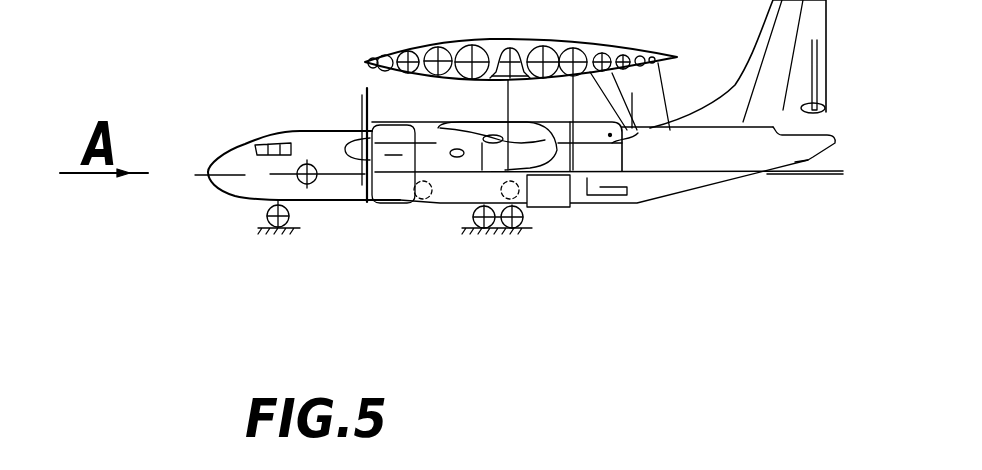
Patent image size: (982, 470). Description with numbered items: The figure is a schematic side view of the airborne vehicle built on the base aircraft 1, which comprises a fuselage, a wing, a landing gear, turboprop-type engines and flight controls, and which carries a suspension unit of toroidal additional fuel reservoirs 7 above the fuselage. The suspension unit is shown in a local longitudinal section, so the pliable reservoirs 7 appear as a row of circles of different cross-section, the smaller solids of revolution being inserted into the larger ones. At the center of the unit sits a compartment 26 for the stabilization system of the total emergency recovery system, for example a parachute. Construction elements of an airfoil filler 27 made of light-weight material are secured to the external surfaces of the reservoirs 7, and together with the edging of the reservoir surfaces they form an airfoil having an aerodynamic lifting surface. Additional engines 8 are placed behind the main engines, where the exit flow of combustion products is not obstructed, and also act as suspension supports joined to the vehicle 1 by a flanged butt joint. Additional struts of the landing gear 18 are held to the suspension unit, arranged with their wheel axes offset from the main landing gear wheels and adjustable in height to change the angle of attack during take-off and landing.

The base aircraft 1 is at (248, 186).
The fuel reservoirs 7 is at (478, 78).
The additional engines 8 is at (610, 136).
The additional struts of the landing gear 18 is at (514, 228).
The compartment 26 is at (535, 78).
The airfoil filler 27 is at (658, 63).